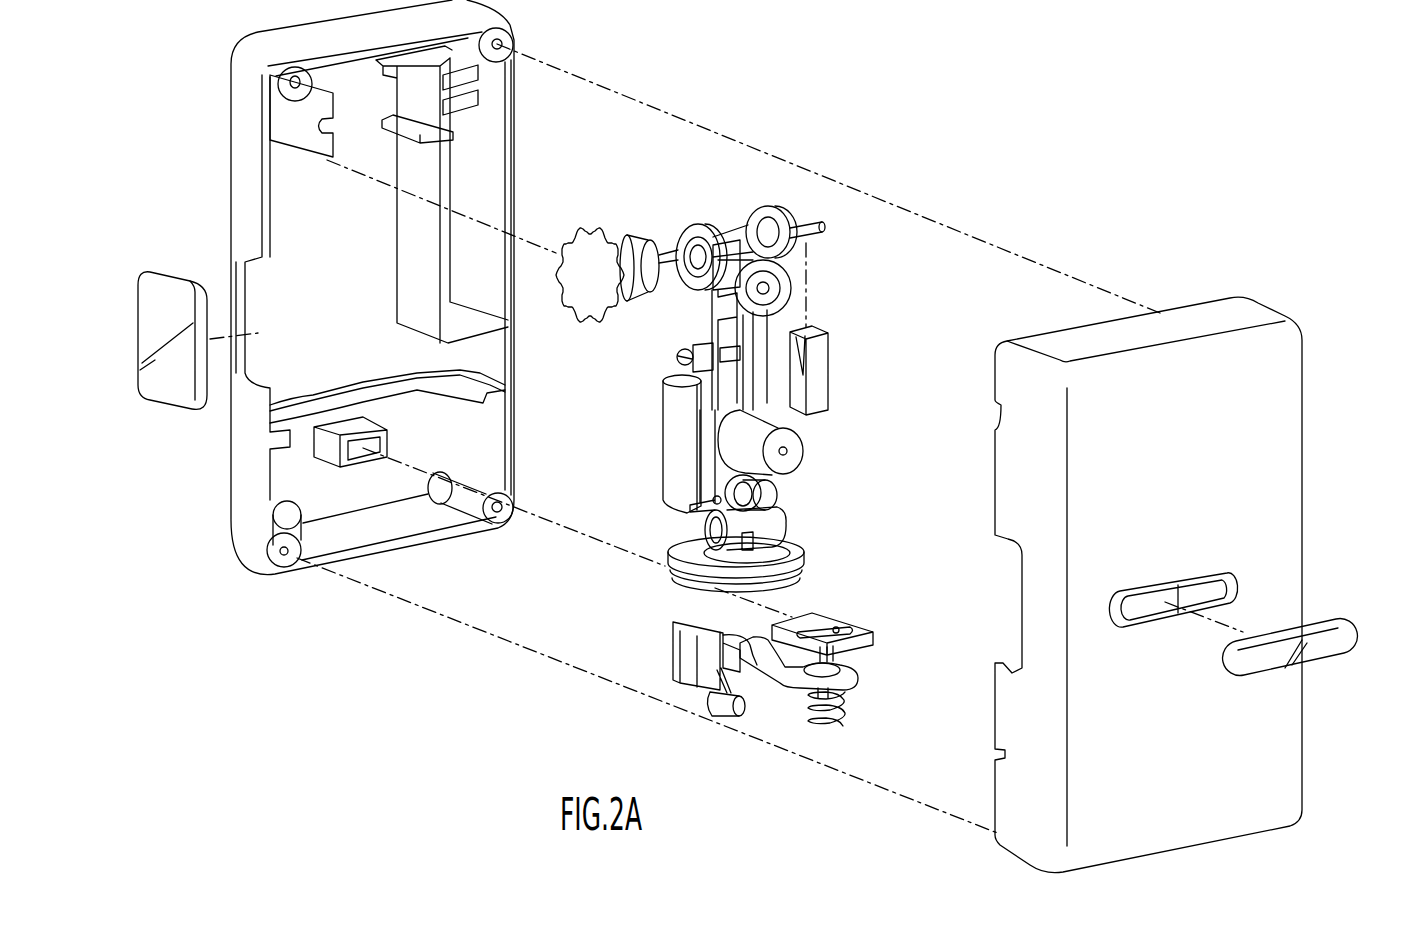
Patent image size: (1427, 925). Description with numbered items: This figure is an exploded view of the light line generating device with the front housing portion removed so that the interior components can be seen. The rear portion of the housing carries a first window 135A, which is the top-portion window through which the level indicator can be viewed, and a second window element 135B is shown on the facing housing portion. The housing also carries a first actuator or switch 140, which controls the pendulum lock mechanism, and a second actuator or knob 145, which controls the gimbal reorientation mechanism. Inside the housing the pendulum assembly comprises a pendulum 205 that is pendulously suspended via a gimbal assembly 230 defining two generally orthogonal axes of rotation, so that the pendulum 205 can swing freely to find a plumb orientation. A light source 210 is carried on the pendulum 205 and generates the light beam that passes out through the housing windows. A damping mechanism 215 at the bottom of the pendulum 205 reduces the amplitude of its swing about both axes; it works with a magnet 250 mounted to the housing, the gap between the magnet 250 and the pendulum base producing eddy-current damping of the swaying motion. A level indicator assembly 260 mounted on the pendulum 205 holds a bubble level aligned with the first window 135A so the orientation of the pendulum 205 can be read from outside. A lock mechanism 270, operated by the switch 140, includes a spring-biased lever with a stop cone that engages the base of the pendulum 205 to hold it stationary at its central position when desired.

The first window 135A is at (182, 384).
The side button pad 135B is at (1343, 638).
The second actuator or knob 145 is at (580, 248).
The gimbal assembly 230 is at (800, 210).
The pendulum 205 is at (712, 322).
The level indicator assembly 260 is at (673, 427).
The light source 210 is at (803, 452).
The damping mechanism 215 is at (812, 547).
The magnet 250 is at (857, 635).
The lock mechanism 270 is at (780, 730).
The first actuator or switch 140 is at (677, 657).